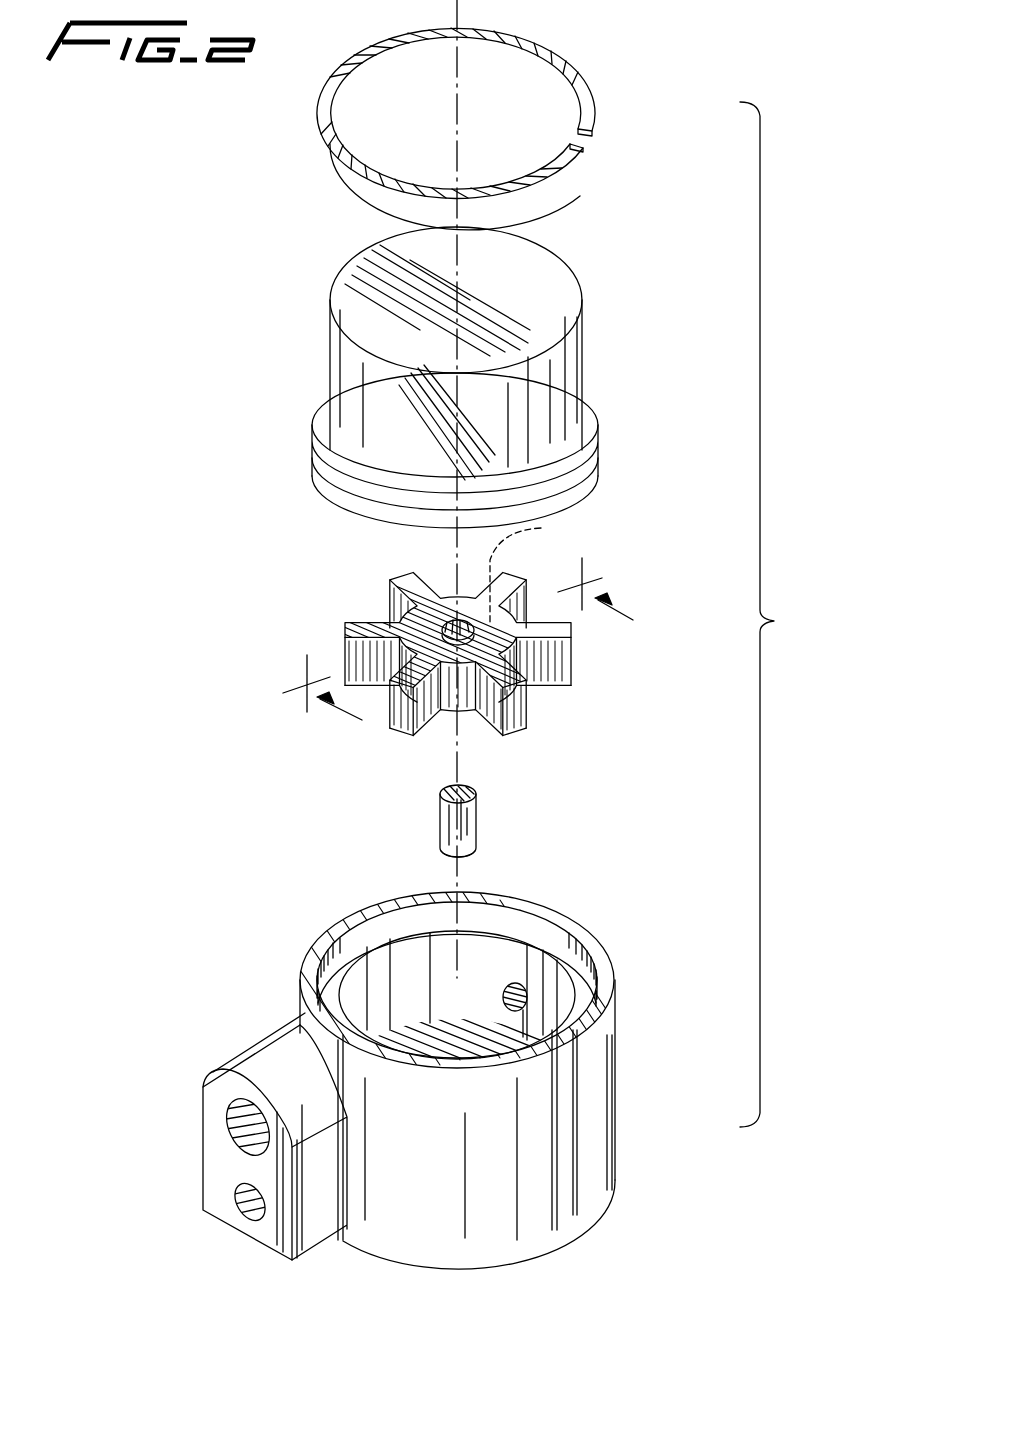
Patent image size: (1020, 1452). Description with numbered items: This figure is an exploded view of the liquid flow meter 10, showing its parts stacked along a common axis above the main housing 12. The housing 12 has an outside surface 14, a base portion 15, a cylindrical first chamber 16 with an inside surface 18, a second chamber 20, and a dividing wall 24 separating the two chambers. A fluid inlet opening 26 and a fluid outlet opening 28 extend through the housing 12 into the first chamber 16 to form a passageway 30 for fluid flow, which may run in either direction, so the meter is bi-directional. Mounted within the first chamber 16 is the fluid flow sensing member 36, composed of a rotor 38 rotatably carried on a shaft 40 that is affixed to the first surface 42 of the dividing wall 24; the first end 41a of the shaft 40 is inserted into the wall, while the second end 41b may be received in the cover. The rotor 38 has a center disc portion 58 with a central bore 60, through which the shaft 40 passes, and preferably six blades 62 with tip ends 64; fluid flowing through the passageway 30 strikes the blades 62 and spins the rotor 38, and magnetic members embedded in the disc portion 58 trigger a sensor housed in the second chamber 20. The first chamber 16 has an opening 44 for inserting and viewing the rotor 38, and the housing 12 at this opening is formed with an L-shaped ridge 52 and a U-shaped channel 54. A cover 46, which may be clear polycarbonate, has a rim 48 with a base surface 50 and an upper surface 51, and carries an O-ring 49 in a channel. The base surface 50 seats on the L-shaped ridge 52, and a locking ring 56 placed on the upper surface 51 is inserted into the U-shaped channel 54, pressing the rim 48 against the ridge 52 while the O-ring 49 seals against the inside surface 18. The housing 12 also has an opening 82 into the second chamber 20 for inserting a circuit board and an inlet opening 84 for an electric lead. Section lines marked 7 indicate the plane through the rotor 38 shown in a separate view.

The liquid flow meter 10 is at (798, 305).
The locking ring 56 is at (568, 70).
The cover 46 is at (515, 368).
The upper surface 51 is at (598, 428).
The rim 48 is at (600, 460).
The O-ring 49 is at (583, 463).
The base surface 50 is at (560, 500).
The center disc portion 58 is at (483, 657).
The blades 62 is at (370, 630).
The rotor 38 is at (560, 668).
The central bore 60 is at (515, 655).
The tip ends 64 is at (380, 655).
The section line 7- 7 is at (458, 648).
The fluid flow sensing member 36 is at (573, 825).
The shaft 40 is at (515, 825).
The first end 41a is at (470, 848).
The second end 41b is at (473, 795).
The opening 44 is at (433, 1075).
The main housing 12 is at (433, 1096).
The inside surface 18 is at (450, 989).
The U-shaped channel 54 is at (530, 908).
The L-shaped ridge 52 is at (560, 930).
The cylindrical first chamber 16 is at (363, 997).
The dividing wall 24 is at (528, 1037).
The fluid inlet opening 26 is at (527, 997).
The passageway 30 is at (528, 1025).
The first surface 42 is at (560, 1097).
The base portion 15 is at (520, 1265).
The second chamber 20 is at (573, 1188).
The opening 82 is at (413, 1264).
The outside surface 14 is at (247, 1129).
The fluid outlet opening 28 is at (232, 1130).
The inlet opening 84 is at (242, 1215).